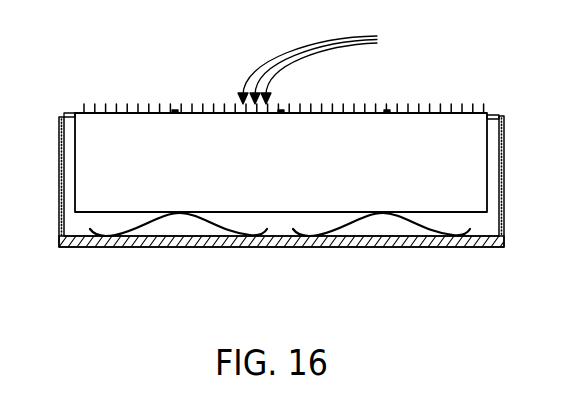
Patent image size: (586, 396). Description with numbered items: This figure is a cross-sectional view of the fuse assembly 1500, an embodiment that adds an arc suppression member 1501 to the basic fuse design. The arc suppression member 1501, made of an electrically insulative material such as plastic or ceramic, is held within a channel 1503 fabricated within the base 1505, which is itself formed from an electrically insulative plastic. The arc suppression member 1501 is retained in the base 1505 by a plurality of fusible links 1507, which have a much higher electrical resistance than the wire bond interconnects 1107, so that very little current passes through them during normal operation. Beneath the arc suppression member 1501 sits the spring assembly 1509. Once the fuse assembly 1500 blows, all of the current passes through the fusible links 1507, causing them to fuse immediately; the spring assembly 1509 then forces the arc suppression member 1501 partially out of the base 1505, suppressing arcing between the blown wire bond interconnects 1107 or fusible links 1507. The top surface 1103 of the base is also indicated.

The fuse assembly 1500 is at (313, 160).
The arc suppression member 1501 is at (325, 170).
The channel 1503 is at (497, 222).
The base 1505 is at (435, 247).
The fusible links 1507 is at (388, 108).
The spring assembly 1509 is at (350, 218).
The top surface of base 1103 is at (502, 108).
The wire bond interconnects 1107 is at (335, 66).